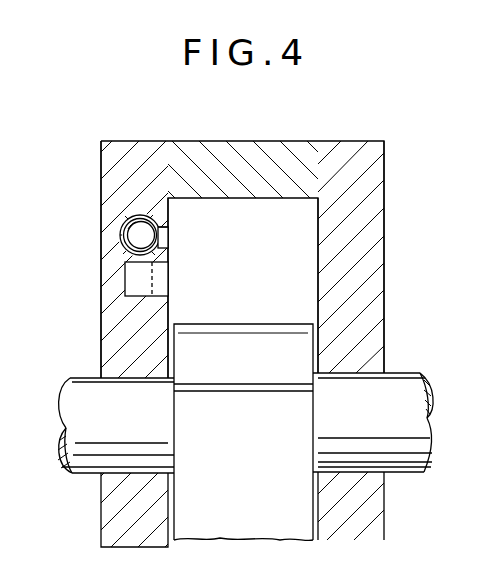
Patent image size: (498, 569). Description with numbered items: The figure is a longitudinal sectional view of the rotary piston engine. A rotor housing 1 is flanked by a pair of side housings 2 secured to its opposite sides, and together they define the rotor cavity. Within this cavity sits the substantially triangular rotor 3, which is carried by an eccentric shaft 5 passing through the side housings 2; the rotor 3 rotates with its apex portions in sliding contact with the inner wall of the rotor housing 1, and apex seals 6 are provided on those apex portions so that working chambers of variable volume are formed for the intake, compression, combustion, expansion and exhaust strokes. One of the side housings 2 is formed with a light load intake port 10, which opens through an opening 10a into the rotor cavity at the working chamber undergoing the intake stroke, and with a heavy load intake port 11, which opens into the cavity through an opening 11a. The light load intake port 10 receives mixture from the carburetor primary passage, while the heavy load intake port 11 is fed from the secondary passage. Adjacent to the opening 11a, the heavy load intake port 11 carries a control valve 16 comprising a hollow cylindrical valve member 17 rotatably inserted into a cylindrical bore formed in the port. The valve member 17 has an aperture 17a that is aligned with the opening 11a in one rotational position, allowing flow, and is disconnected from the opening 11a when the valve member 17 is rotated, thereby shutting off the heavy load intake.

The rotor housing 1 is at (252, 141).
The side housings 2 is at (112, 163).
The rotor 3 is at (285, 447).
The eccentric shaft 5 is at (80, 376).
The apex seals 6 is at (240, 388).
The light load intake port 10 is at (138, 280).
The opening 10a is at (170, 280).
The heavy load intake port 11 is at (166, 237).
The opening 11a is at (168, 230).
The control valve 16 is at (122, 215).
The valve member 17 is at (122, 238).
The aperture 17a is at (157, 236).